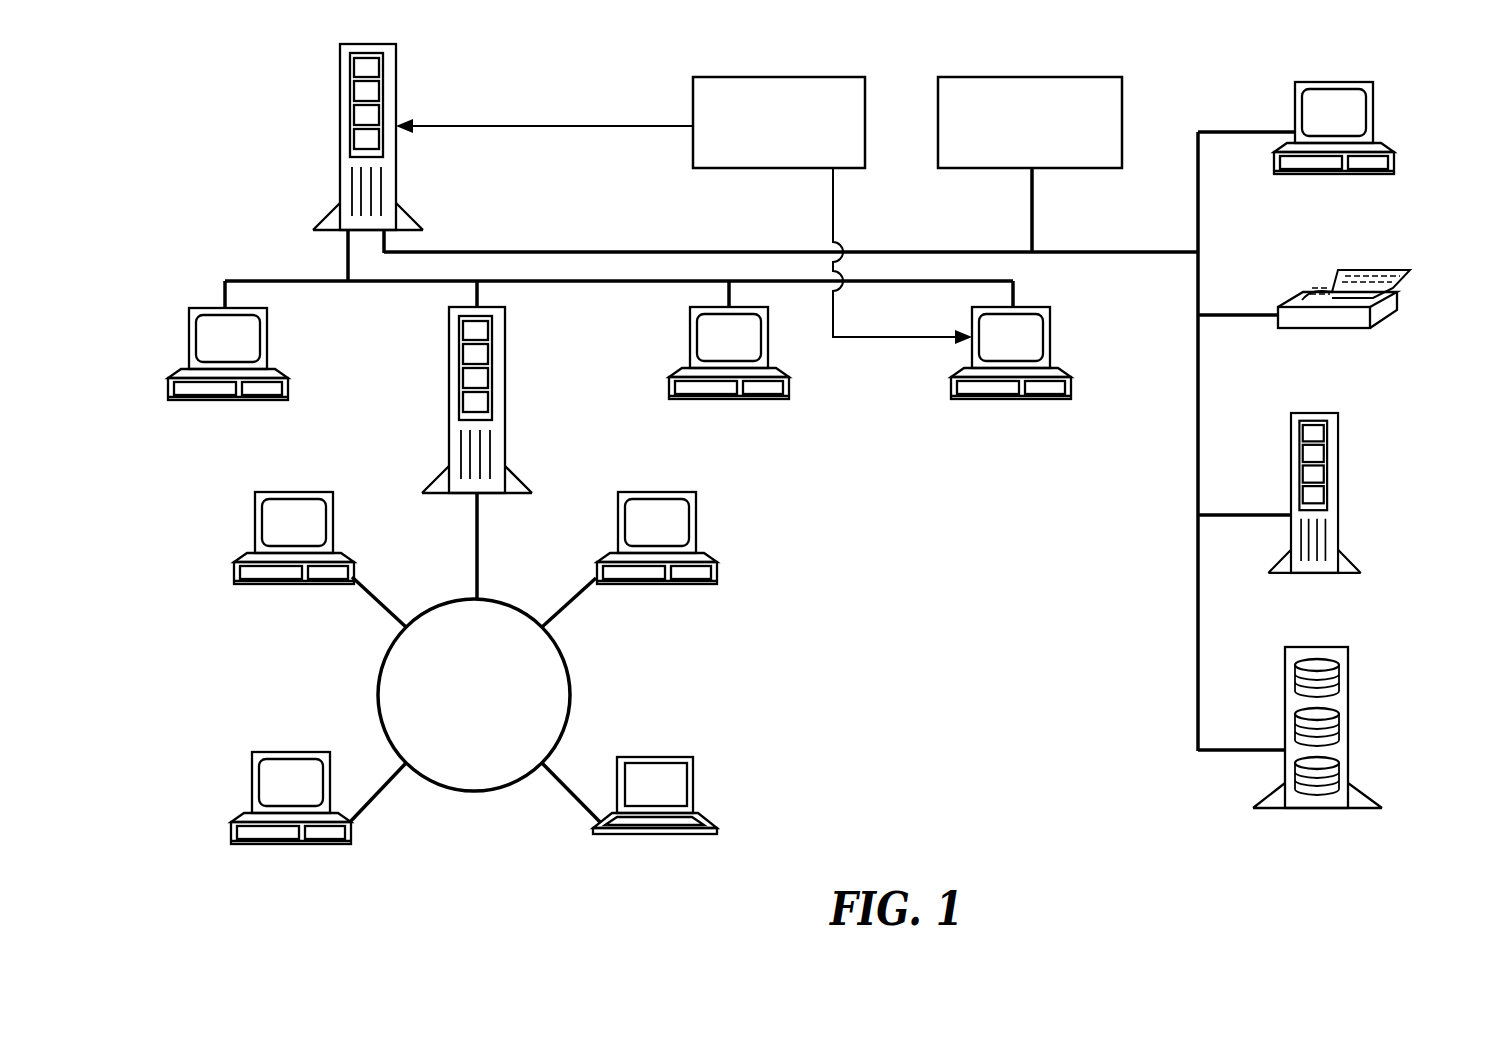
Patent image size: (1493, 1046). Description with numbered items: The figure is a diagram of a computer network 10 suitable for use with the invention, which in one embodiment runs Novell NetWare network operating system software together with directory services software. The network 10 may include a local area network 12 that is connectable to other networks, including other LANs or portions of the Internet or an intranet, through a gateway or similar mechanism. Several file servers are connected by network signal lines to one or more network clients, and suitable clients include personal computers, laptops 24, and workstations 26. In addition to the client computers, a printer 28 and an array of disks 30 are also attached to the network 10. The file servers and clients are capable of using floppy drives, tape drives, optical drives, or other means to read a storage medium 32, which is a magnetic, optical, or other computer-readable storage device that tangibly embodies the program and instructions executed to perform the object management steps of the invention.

The computer network 10 is at (252, 140).
The local area network 12 is at (310, 282).
The laptop 24 is at (693, 775).
The workstation 26 is at (1338, 490).
The printer 28 is at (1395, 300).
The array of disks 30 is at (1348, 722).
The storage medium 32 is at (770, 77).